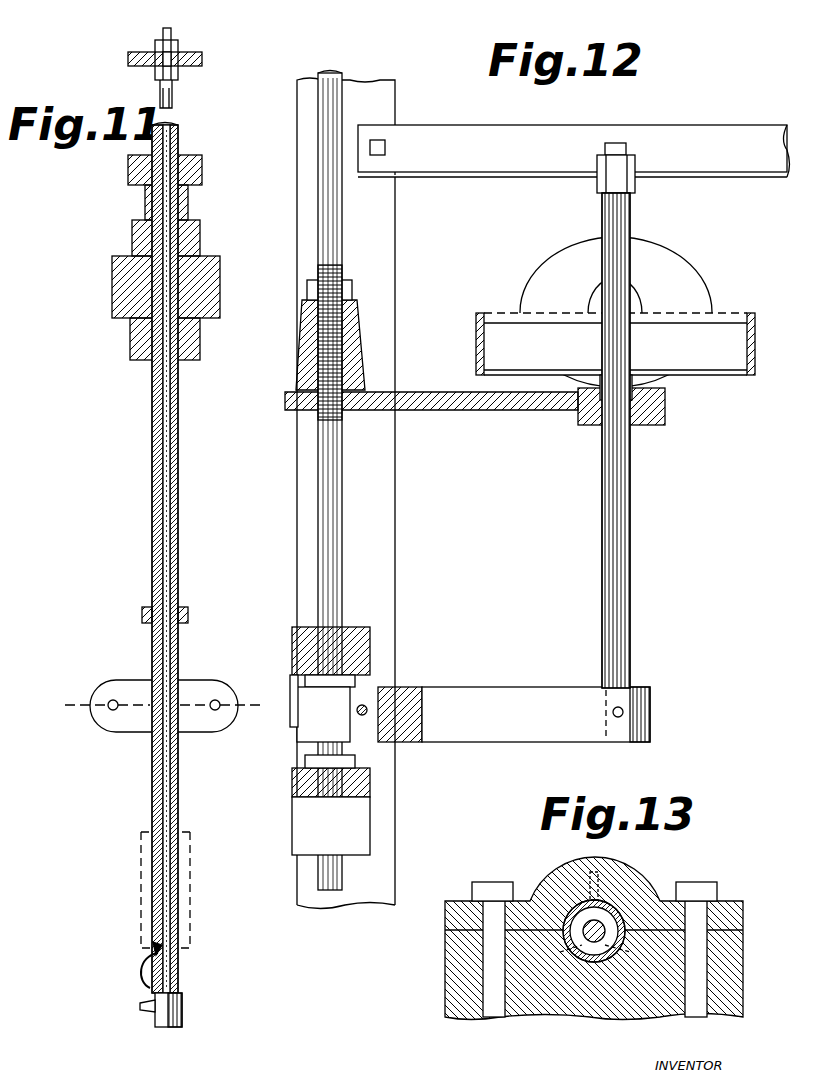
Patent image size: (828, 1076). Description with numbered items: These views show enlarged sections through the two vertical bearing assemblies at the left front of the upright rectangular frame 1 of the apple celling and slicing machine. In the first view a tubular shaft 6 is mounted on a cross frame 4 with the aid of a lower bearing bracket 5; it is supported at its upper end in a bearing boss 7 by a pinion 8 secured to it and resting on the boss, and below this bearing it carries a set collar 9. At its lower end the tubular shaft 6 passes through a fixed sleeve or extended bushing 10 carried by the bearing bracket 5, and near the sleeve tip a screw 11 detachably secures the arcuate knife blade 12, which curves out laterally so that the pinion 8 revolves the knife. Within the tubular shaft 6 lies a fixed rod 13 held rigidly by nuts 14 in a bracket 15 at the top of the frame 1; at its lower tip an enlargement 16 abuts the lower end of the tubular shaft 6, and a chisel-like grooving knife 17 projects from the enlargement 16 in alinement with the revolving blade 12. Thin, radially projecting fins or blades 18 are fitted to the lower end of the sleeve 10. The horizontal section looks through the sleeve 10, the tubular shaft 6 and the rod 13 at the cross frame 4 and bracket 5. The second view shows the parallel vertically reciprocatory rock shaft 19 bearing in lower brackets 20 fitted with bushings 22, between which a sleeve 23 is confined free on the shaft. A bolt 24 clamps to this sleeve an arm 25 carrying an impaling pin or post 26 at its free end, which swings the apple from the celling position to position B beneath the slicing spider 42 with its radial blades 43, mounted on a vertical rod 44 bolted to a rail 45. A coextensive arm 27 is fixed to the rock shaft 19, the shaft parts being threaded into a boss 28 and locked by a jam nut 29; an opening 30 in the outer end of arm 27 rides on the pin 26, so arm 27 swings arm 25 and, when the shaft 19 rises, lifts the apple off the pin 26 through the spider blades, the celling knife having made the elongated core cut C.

In FIG. 12, the upright rectangular frame 1 is at (388, 852).
In FIG. 11, the cross frame 4 is at (218, 282).
In FIG. 13, the cross frame 4 is at (644, 1008).
In FIG. 11, the lower bearing bracket 5 is at (206, 688).
In FIG. 13, the lower bearing bracket 5 is at (630, 882).
In FIG. 11, the tubular shaft 6 is at (178, 503).
In FIG. 13, the tubular shaft 6 is at (660, 896).
In FIG. 11, the bearing boss 7 is at (202, 236).
In FIG. 11, the pinion 8 is at (194, 160).
In FIG. 11, the set collar 9 is at (200, 350).
In FIG. 11, the fixed sleeve or extended bushing 10 is at (180, 815).
In FIG. 13, the fixed sleeve or extended bushing 10 is at (576, 898).
In FIG. 11, the screw 11 is at (153, 946).
In FIG. 11, the arcuate knife blade 12 is at (145, 964).
In FIG. 11, the fixed rod 13 is at (165, 515).
In FIG. 13, the fixed rod 13 is at (594, 935).
In FIG. 11, the nuts 14 is at (172, 46).
In FIG. 11, the bracket 15 is at (204, 60).
In FIG. 11, the enlargement 16 is at (180, 1012).
In FIG. 11, the chisel-like grooving knife 17 is at (140, 1005).
In FIG. 11, the fins or blades 18 is at (143, 850).
In FIG. 12, the rock shaft 19 is at (340, 246).
In FIG. 12, the lower brackets 20 is at (362, 656).
In FIG. 12, the bushings 22 is at (355, 680).
In FIG. 12, the sleeve 23 is at (313, 733).
In FIG. 12, the bolt 24 is at (368, 710).
In FIG. 12, the arm 25 is at (554, 738).
In FIG. 12, the impaling pin or post 26 is at (632, 472).
In FIG. 12, the arm 27 is at (484, 400).
In FIG. 12, the boss 28 is at (360, 320).
In FIG. 12, the jam nut 29 is at (352, 285).
In FIG. 12, the opening 30 is at (625, 405).
In FIG. 12, the slicing spider 42 is at (755, 355).
In FIG. 12, the radial blades 43 is at (500, 340).
In FIG. 12, the vertical rod 44 is at (615, 226).
In FIG. 12, the rail 45 is at (574, 151).
In FIG. 12, the position B is at (690, 265).
In FIG. 12, the elongated cut C is at (640, 304).